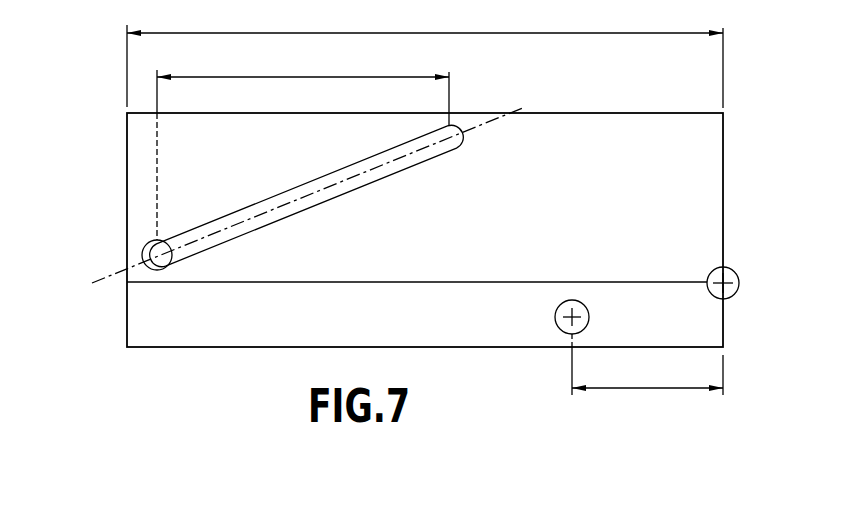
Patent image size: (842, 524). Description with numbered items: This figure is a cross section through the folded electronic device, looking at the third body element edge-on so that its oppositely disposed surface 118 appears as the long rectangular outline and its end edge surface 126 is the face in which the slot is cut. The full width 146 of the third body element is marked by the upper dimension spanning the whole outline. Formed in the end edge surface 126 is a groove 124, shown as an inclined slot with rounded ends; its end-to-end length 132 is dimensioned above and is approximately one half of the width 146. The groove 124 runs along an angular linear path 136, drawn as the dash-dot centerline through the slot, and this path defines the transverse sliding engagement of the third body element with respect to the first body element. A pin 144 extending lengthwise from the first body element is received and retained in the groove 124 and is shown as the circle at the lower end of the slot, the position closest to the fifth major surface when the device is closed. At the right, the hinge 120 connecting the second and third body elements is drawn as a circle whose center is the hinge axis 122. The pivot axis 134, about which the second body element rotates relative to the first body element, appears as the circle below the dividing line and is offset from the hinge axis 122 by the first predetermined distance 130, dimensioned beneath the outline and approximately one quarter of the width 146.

The oppositely disposed surface 118 is at (146, 108).
The hinge 120 is at (736, 292).
The hinge axis 122 is at (728, 272).
The groove 124 is at (457, 145).
The end edge surface 126 is at (491, 238).
The first predetermined distance 130 is at (648, 392).
The length end-to-end 132 is at (276, 76).
The pivot axis 134 is at (557, 323).
The angular linear path 136 is at (112, 273).
The pin 144 is at (160, 263).
The width 146 is at (276, 32).